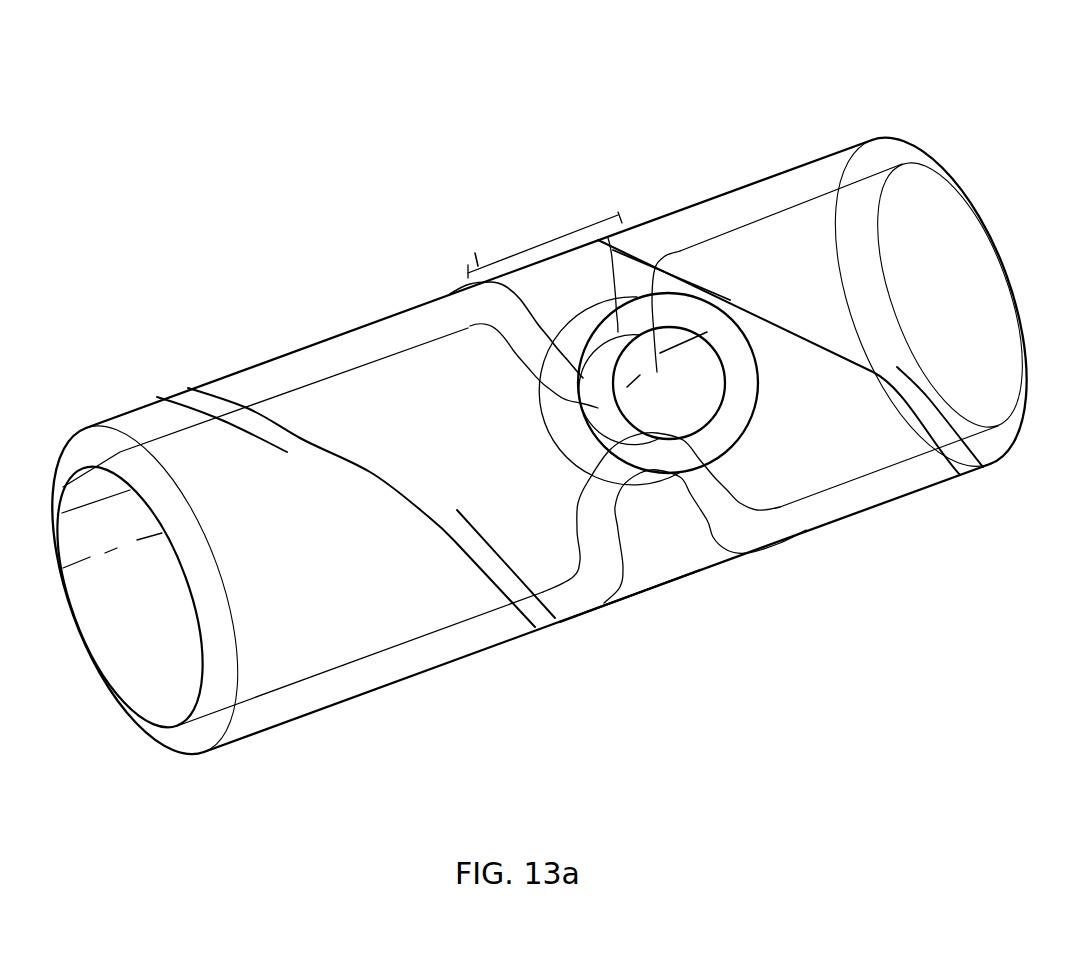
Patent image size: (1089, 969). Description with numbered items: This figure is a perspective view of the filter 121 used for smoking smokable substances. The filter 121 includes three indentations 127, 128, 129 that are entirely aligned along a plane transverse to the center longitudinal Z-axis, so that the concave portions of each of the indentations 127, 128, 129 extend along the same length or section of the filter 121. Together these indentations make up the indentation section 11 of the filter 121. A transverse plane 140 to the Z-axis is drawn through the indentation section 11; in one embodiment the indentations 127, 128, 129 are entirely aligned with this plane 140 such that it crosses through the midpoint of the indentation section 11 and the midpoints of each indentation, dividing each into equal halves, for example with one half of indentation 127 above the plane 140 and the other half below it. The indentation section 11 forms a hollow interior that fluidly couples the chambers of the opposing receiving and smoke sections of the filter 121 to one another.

The filter 121 is at (290, 68).
The transverse plane 140 is at (717, 381).
The indentation 129 is at (573, 197).
The indentation section 11 is at (462, 246).
The indentation 127 is at (780, 417).
The indentation 128 is at (647, 632).